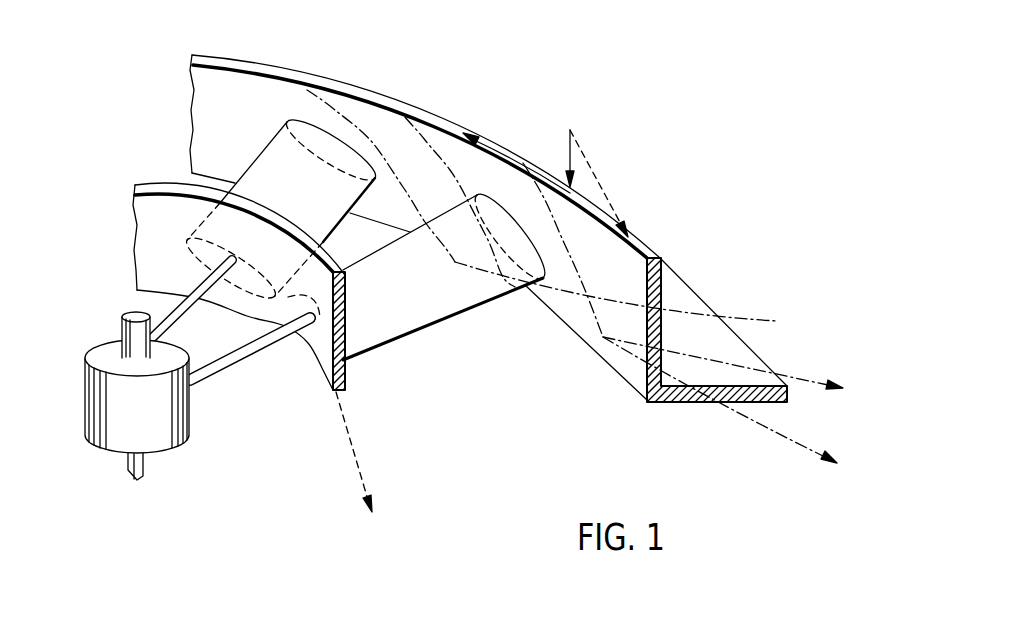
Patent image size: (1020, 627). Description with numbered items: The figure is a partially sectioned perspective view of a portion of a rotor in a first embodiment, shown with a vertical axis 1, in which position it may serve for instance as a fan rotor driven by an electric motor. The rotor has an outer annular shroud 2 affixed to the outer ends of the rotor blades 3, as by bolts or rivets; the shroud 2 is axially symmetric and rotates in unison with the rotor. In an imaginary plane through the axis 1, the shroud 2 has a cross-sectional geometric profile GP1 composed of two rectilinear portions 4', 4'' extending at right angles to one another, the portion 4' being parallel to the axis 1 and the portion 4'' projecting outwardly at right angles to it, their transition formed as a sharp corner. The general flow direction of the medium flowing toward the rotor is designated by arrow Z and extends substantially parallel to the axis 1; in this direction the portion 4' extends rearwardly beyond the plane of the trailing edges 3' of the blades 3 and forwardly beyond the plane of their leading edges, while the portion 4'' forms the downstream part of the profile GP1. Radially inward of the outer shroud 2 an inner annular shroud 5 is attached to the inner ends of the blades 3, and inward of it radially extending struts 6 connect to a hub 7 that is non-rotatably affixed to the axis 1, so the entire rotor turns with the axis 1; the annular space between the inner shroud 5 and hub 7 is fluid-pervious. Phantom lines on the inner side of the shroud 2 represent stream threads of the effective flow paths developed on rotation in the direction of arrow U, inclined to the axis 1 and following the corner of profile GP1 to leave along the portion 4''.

The axis 1 is at (138, 455).
The outer annular shroud 2 is at (618, 265).
The rotor blades 3 is at (347, 236).
The trailing edges 3' is at (504, 269).
The rectilinear portion 4' is at (655, 350).
The rectilinear portion 4'' is at (787, 350).
The inner annular shroud 5 is at (308, 343).
The struts 6 is at (237, 352).
The hub 7 is at (170, 405).
The geometric profile GP1 is at (655, 293).
The arrow Z is at (483, 118).
The arrow U is at (527, 163).